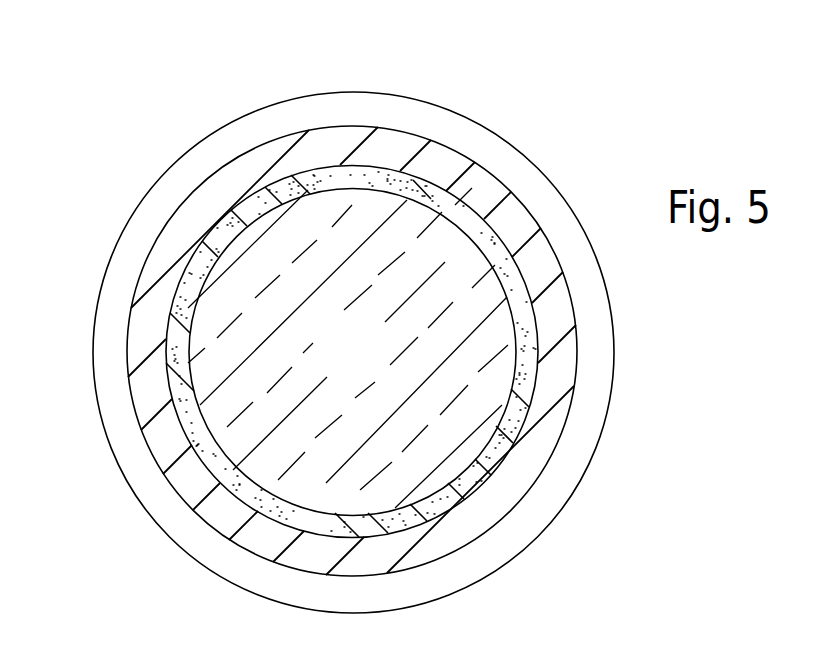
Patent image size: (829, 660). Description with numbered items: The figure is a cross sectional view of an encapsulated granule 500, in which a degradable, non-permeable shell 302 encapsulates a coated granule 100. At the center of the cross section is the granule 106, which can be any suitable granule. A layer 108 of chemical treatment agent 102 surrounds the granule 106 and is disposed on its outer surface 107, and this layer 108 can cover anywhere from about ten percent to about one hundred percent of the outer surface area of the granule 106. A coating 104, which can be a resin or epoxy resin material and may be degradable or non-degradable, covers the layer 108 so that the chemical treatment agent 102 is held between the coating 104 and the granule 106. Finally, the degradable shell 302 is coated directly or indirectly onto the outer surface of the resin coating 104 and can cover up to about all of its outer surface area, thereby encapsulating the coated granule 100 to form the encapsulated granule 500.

The encapsulated granule 500 is at (518, 92).
The degradable, non-permeable shell 302 is at (197, 155).
The coated granule 100 is at (440, 138).
The coating 104 is at (327, 138).
The layer of chemical treatment agent 108 is at (205, 478).
The outer surface of the granule 107 is at (527, 375).
The chemical treatment agent 102 is at (190, 383).
The granule 106 is at (374, 368).